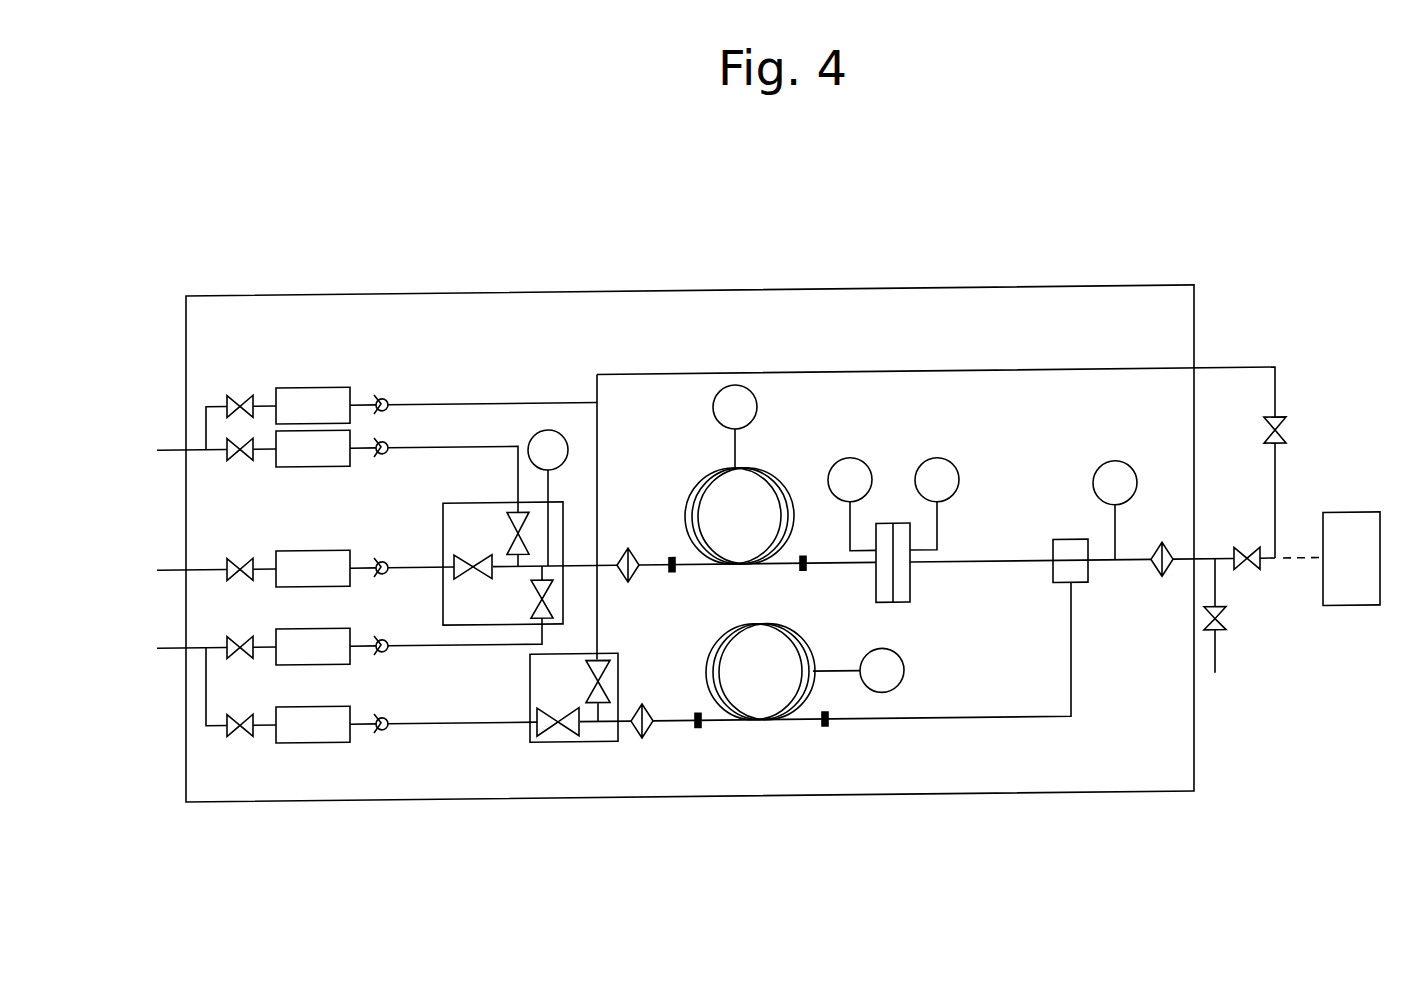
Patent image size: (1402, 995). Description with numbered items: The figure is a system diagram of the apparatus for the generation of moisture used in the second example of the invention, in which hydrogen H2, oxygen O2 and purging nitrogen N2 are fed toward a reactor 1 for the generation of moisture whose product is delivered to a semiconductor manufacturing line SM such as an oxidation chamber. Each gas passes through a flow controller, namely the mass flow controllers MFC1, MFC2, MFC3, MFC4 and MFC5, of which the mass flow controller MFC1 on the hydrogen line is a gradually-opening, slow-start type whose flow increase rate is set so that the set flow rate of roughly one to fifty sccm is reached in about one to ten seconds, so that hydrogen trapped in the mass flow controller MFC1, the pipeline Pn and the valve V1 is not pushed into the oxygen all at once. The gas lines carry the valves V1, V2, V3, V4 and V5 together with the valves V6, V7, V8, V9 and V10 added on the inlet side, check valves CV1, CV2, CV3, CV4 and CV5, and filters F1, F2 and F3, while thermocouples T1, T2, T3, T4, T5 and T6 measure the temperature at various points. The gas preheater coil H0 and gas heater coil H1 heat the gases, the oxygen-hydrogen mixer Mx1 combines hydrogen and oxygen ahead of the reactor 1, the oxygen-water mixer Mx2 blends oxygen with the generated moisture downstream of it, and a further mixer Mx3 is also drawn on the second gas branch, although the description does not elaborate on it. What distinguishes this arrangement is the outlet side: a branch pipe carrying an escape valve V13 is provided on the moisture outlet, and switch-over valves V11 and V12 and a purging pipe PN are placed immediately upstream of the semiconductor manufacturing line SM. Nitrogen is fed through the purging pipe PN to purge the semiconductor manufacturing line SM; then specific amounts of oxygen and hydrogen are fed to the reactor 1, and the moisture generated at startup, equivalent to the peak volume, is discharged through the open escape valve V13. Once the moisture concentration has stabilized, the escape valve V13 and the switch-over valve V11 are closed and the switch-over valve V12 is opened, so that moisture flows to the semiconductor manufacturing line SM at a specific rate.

The nitrogen N2 is at (128, 452).
The hydrogen H2 is at (128, 572).
The oxygen O2 is at (128, 649).
The valve V1 is at (474, 558).
The valve V2 is at (528, 538).
The valve V3 is at (532, 604).
The valve V4 is at (554, 712).
The valve V5 is at (614, 682).
The valve V6 is at (228, 403).
The valve V7 is at (240, 461).
The valve V8 is at (240, 559).
The valve V9 is at (240, 637).
The valve V10 is at (240, 737).
The switch-over valve V11 is at (1286, 438).
The switch-over valve V12 is at (1252, 560).
The escape valve V13 is at (1225, 638).
The check valve CV1 is at (390, 400).
The check valve CV2 is at (390, 456).
The check valve CV3 is at (386, 578).
The check valve CV4 is at (390, 655).
The check valve CV5 is at (390, 733).
The mass flow controller MFC1 is at (313, 568).
The mass flow controller MFC2 is at (313, 448).
The mass flow controller MFC3 is at (313, 646).
The mass flow controller MFC4 is at (313, 724).
The mass flow controller MFC5 is at (313, 405).
The thermocouple T1 is at (548, 498).
The thermocouple T2 is at (735, 426).
The thermocouple T3 is at (852, 504).
The thermocouple T4 is at (934, 504).
The thermocouple T5 is at (1115, 510).
The thermocouple T6 is at (858, 670).
The filter F1 is at (630, 553).
The filter F2 is at (648, 710).
The filter F3 is at (1162, 552).
The oxygen-hydrogen mixer Mx1 is at (563, 597).
The oxygen-water mixer Mx2 is at (1088, 575).
The mixer Mx3 is at (585, 746).
The gas preheater coil H0 is at (778, 483).
The gas heater coil H1 is at (790, 632).
The pipeline Pn is at (408, 568).
The purging pipe PN is at (1020, 379).
The reactor for the generation of moisture 1 is at (890, 531).
The semiconductor manufacturing line SM is at (1350, 525).